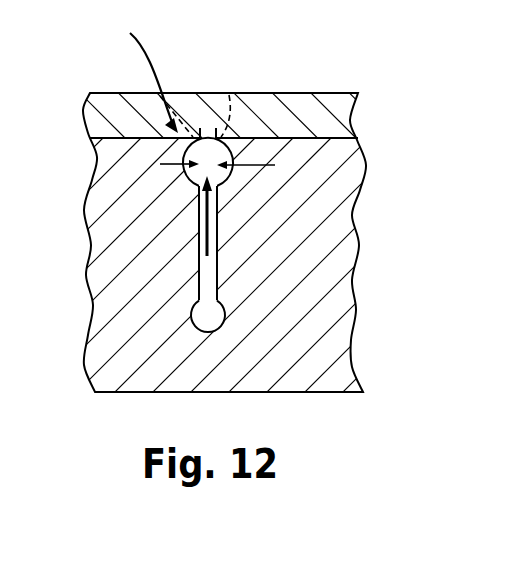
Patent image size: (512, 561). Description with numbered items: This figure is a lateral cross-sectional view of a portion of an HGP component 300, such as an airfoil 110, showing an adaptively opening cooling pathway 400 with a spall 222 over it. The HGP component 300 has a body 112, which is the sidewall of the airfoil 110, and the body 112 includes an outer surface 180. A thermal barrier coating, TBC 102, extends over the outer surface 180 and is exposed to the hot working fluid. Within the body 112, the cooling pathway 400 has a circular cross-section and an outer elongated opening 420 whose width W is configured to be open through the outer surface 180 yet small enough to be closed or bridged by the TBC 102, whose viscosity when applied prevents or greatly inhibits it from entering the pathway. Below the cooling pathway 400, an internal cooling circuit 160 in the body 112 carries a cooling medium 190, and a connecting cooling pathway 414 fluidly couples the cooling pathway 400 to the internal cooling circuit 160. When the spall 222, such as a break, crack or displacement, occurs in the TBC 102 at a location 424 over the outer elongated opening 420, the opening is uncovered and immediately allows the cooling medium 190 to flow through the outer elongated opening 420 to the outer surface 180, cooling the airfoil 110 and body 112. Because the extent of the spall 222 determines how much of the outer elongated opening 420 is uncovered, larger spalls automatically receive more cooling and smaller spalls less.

The thermal barrier coating (TBC) 102 is at (242, 95).
The airfoil 110 is at (256, 265).
The body 112 is at (322, 237).
The internal cooling circuit 160 is at (207, 318).
The outer surface 180 is at (120, 137).
The cooling medium 190 is at (205, 232).
The spall 222 is at (229, 95).
The HGP component 300 is at (256, 226).
The adaptively opening cooling pathway 400 is at (243, 140).
The connecting cooling pathway 414 is at (218, 268).
The outer elongated opening 420 is at (199, 137).
The location 424 is at (131, 70).